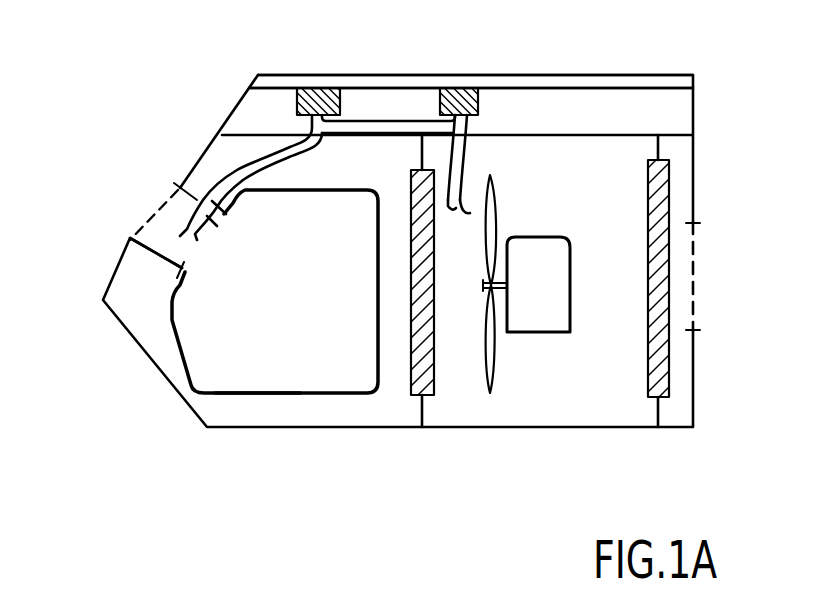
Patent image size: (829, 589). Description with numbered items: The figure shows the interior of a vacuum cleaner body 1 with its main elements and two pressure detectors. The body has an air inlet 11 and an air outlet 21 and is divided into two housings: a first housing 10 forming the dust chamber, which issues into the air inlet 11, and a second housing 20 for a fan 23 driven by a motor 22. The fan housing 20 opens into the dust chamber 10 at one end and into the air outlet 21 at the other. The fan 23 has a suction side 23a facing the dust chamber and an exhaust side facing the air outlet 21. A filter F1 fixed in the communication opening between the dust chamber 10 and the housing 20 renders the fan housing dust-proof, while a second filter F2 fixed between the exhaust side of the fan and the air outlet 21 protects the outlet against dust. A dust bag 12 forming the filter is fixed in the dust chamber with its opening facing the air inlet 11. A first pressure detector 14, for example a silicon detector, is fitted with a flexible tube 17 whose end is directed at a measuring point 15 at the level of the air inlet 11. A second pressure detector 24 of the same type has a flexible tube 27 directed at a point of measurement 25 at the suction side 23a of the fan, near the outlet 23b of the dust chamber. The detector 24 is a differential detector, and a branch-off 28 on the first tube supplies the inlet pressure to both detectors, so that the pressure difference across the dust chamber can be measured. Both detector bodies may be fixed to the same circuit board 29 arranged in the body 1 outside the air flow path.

The vacuum cleaner body 1 is at (703, 181).
The first housing 10 is at (280, 410).
The air inlet 11 is at (131, 206).
The dust bag 12 is at (238, 398).
The pressure detector 14 is at (320, 88).
The measuring point 15 is at (167, 223).
The flexible tube 17 is at (224, 163).
The second housing 20 is at (618, 385).
The air outlet 21 is at (702, 270).
The motor 22 is at (537, 310).
The fan 23 is at (490, 382).
The suction side 23a is at (473, 367).
The outlet of the dust chamber 23b is at (398, 372).
The second pressure detector 24 is at (460, 88).
The point of measurement 25 is at (458, 206).
The flexible tube 27 is at (475, 147).
The branch-off 28 is at (377, 110).
The circuit board 29 is at (608, 72).
The filter F1 is at (441, 355).
The filter F2 is at (678, 367).